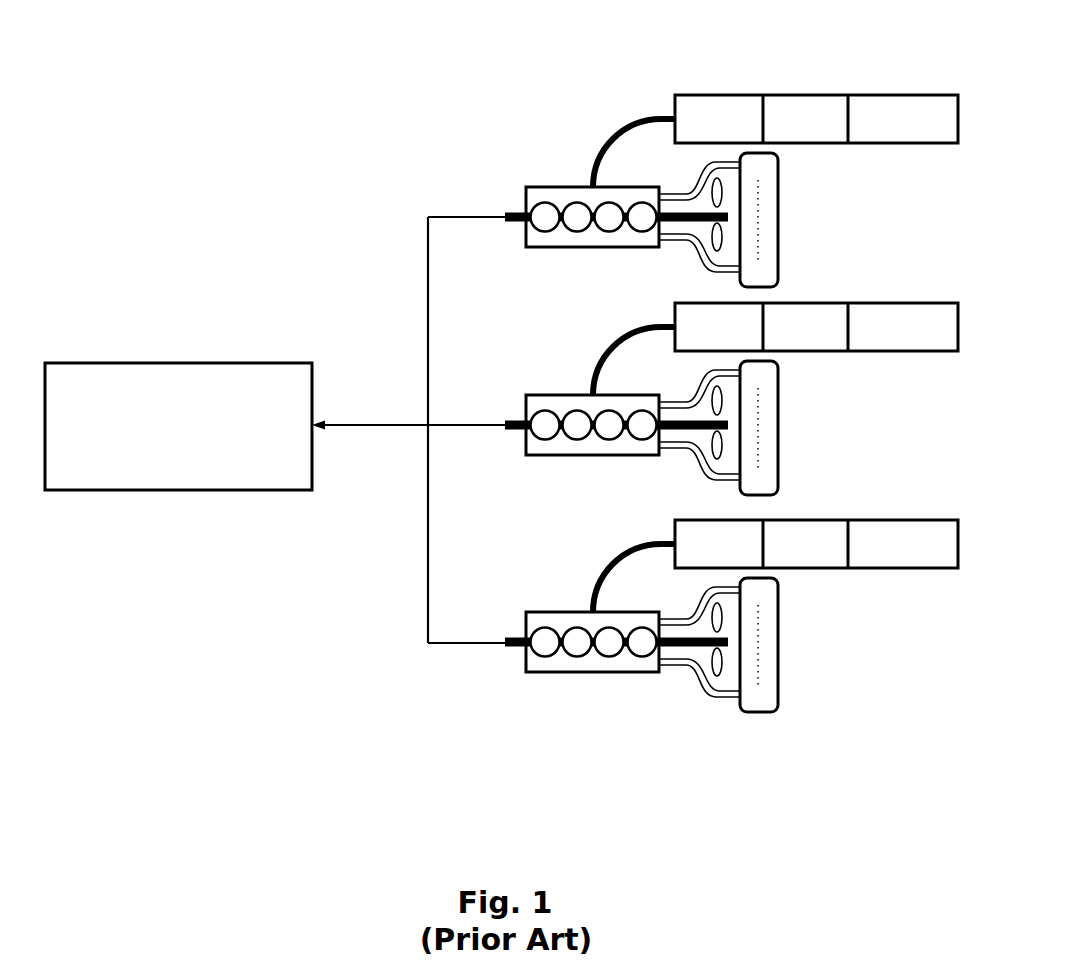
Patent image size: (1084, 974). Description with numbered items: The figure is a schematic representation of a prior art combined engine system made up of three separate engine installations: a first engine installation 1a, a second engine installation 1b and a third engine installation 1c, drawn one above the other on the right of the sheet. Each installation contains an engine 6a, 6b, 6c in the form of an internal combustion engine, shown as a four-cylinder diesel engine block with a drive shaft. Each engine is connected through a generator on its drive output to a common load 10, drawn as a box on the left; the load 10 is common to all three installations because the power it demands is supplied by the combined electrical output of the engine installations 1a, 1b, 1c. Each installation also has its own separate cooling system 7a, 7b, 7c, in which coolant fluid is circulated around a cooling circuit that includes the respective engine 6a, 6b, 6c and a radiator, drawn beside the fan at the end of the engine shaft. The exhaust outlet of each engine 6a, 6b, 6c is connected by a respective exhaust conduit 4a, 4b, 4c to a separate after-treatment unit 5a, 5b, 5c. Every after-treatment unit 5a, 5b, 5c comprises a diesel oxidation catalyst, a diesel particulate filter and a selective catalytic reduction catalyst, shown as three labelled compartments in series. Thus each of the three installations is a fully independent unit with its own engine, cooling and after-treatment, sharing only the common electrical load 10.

The common load 10 is at (178, 426).
The first engine installation 1a is at (645, 197).
The second engine installation 1b is at (645, 405).
The third engine installation 1c is at (645, 622).
The exhaust conduit 4a is at (617, 133).
The exhaust conduit 4b is at (617, 341).
The exhaust conduit 4c is at (617, 558).
The after-treatment unit 5a is at (832, 93).
The after-treatment unit 5b is at (832, 301).
The after-treatment unit 5c is at (832, 518).
The engine 6a is at (568, 248).
The engine 6b is at (568, 456).
The engine 6c is at (568, 673).
The cooling system 7a is at (782, 212).
The cooling system 7b is at (782, 420).
The cooling system 7c is at (782, 637).